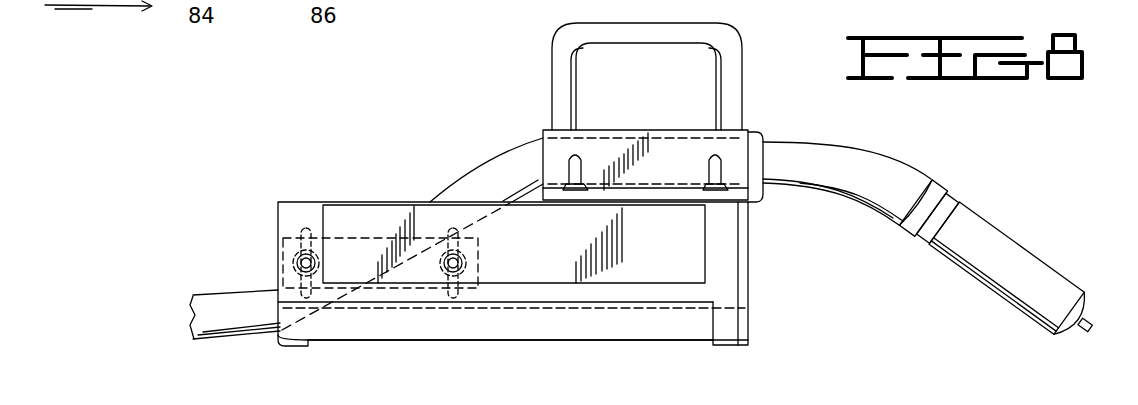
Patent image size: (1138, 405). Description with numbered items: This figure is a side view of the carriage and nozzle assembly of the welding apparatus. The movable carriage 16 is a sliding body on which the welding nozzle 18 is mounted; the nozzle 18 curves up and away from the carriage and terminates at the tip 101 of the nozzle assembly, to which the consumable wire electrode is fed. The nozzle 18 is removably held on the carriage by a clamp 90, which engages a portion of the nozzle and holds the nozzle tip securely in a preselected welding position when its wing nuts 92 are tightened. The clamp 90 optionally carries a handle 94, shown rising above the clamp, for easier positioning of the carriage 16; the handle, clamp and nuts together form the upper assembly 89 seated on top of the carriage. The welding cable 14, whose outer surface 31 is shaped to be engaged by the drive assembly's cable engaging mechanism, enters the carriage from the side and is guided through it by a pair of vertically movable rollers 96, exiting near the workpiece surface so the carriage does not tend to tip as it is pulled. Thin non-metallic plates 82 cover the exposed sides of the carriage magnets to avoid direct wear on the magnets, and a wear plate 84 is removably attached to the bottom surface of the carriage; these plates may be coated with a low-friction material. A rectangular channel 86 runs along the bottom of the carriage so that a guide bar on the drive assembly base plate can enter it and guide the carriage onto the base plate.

The welding cable 14 is at (243, 295).
The movable carriage 16 is at (738, 294).
The welding nozzle 18 is at (880, 168).
The outer surface of the welding cable 31 is at (260, 337).
The non-metallic plate 82 is at (670, 256).
The wear plate 84 is at (305, 347).
The channel 86 is at (552, 310).
The handle assembly 89 is at (520, 124).
The clamp 90 is at (679, 174).
The wing nuts 92 is at (585, 180).
The handle 94 is at (697, 28).
The vertically movable rollers 96 is at (386, 222).
The tip of the nozzle assembly 101 is at (1073, 297).